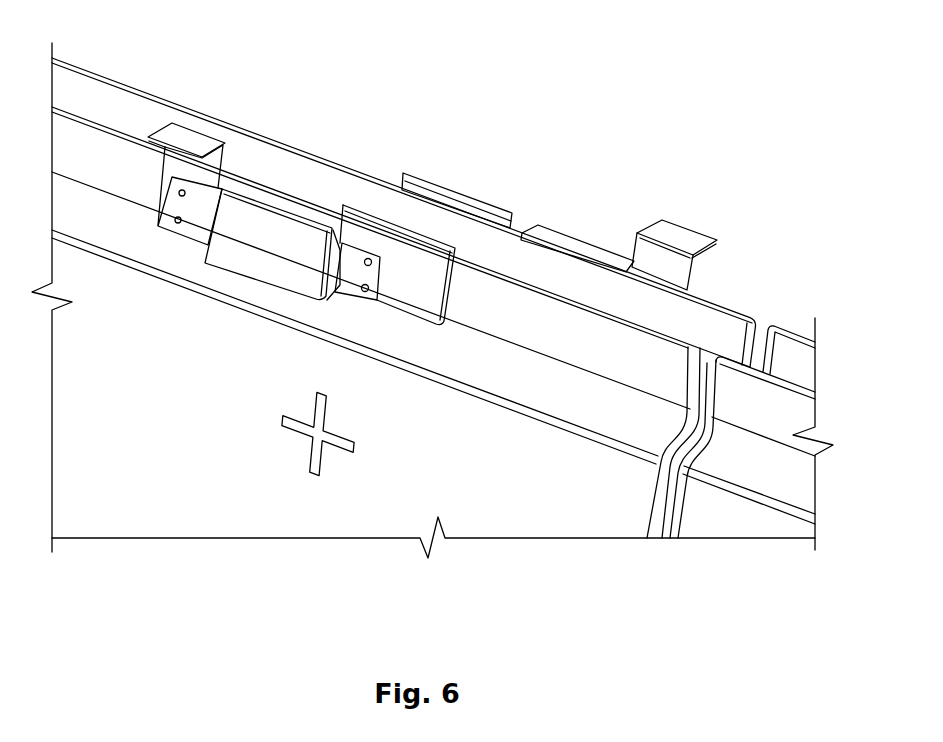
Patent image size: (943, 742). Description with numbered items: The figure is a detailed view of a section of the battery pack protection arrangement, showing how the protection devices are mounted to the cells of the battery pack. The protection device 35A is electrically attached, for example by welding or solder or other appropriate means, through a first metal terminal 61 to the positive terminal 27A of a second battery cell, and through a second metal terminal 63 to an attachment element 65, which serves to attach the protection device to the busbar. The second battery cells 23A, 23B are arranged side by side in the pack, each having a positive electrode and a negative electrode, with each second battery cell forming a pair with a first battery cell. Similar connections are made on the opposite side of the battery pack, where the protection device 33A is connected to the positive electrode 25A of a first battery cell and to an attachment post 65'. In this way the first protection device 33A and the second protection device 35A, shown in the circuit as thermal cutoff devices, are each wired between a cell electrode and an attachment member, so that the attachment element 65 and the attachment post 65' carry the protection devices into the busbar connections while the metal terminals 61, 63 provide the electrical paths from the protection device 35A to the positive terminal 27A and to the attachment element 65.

The attachment element 65 is at (190, 142).
The positive electrode 25A is at (447, 195).
The protection device 33A is at (575, 247).
The attachment post 65' is at (676, 225).
The second metal terminal 63 is at (197, 222).
The protection device 35A is at (268, 245).
The first metal terminal 61 is at (362, 270).
The positive terminal 27A is at (415, 300).
The second battery cell 23A is at (657, 527).
The second battery cell 23B is at (770, 503).